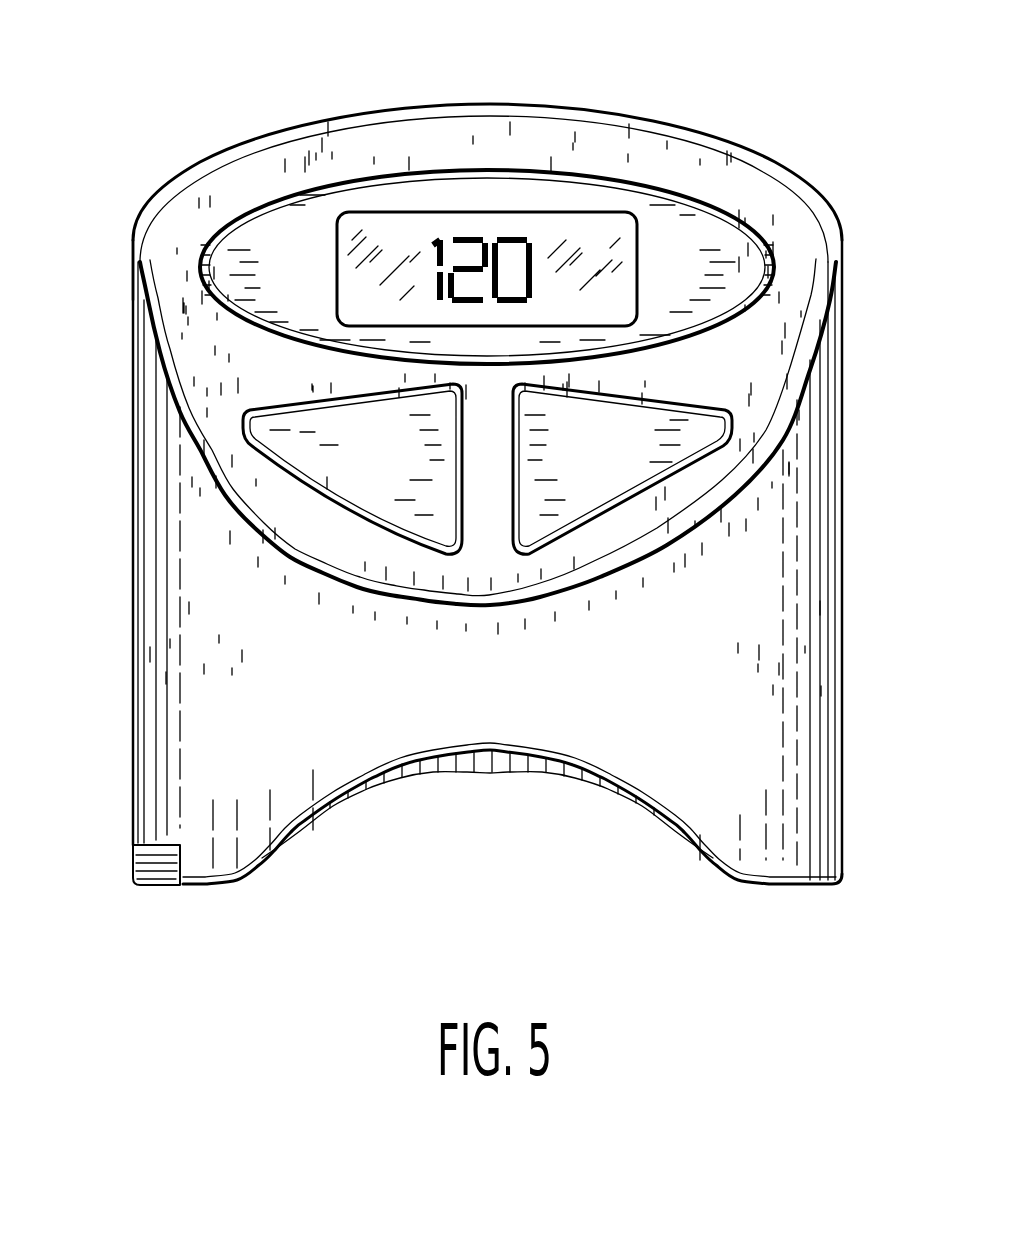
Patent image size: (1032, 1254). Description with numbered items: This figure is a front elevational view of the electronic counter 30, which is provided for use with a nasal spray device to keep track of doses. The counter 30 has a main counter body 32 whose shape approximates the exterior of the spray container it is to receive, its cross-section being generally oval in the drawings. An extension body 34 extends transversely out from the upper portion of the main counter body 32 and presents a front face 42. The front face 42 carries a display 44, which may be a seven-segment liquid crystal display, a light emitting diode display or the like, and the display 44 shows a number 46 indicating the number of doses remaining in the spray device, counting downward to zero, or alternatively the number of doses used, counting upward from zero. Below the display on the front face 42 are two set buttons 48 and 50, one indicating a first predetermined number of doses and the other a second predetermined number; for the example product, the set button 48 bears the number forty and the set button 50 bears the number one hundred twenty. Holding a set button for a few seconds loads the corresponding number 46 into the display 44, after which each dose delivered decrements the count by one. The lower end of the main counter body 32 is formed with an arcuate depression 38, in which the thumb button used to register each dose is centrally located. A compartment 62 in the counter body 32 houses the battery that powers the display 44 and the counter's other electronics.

The electronic counter 30 is at (860, 275).
The main counter body 32 is at (150, 676).
The extension body 34 is at (203, 182).
The arcuate depression 38 is at (306, 830).
The front face 42 is at (153, 246).
The display 44 is at (600, 233).
The number 46 is at (485, 232).
The set button 48 is at (287, 440).
The set button 50 is at (700, 435).
The compartment 62 is at (157, 883).